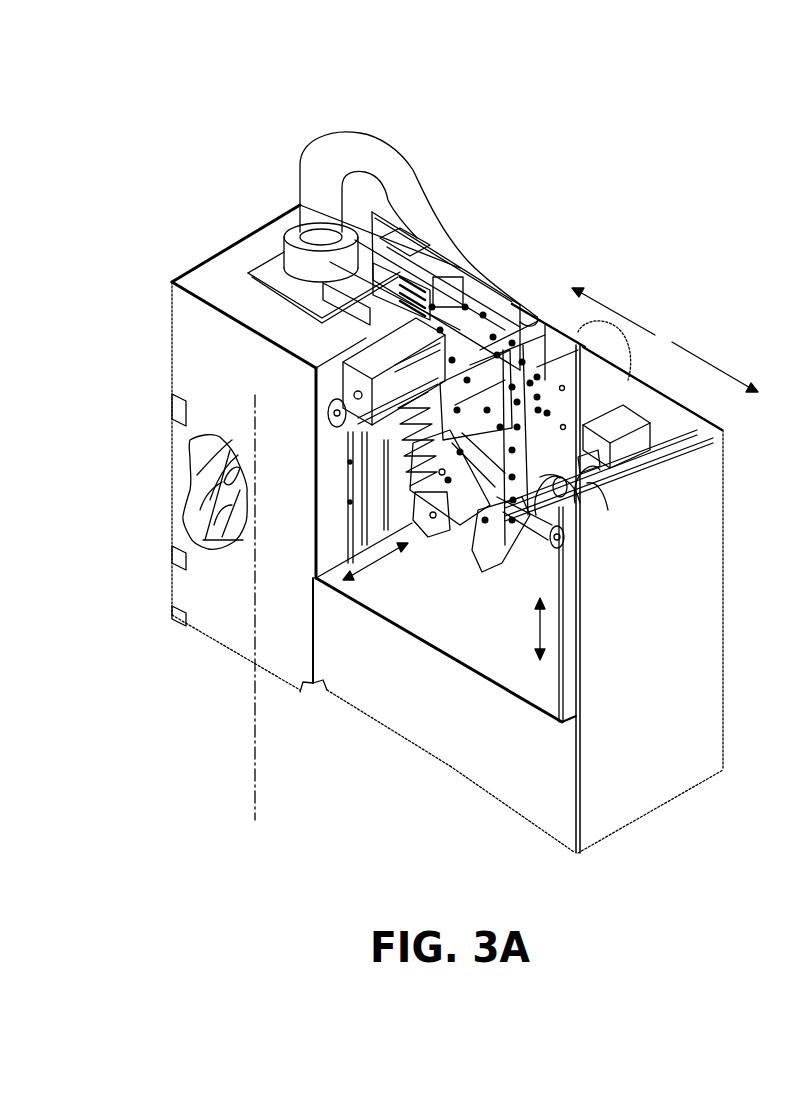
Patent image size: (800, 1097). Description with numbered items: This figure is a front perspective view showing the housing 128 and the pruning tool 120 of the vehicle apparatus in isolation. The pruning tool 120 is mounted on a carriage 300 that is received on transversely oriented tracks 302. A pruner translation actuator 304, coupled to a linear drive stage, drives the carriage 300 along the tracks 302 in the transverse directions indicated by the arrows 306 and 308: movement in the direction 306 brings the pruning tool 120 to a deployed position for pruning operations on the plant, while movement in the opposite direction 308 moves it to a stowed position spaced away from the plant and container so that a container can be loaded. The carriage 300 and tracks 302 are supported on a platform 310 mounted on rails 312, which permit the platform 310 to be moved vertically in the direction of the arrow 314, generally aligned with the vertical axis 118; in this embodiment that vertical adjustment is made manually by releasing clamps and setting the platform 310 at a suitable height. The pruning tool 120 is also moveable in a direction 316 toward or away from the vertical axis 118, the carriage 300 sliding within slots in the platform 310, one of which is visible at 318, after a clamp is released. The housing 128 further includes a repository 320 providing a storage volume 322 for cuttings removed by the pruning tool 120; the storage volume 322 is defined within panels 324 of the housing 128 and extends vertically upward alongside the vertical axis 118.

The vertical axis 118 is at (255, 733).
The pruning tool 120 is at (443, 271).
The housing 128 is at (680, 592).
The carriage 300 is at (622, 425).
The tracks 302 is at (618, 452).
The pruner translation actuator 304 is at (352, 392).
The transverse movement direction (deploy) 306 is at (607, 307).
The transverse movement direction (stow) 308 is at (713, 363).
The platform 310 is at (547, 484).
The rails 312 is at (415, 508).
The vertical movement direction 314 is at (538, 629).
The spacing adjustment direction 316 is at (374, 564).
The slot 318 is at (580, 468).
The repository 320 is at (230, 251).
The storage volume 322 is at (198, 455).
The panels 324 is at (218, 285).